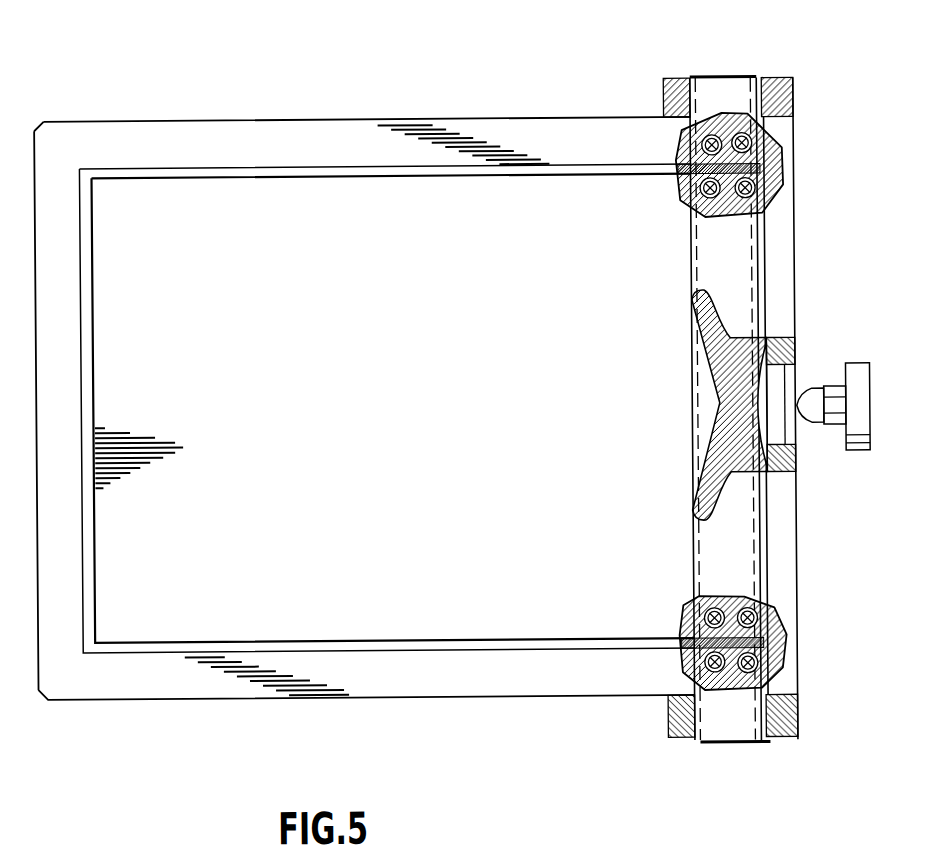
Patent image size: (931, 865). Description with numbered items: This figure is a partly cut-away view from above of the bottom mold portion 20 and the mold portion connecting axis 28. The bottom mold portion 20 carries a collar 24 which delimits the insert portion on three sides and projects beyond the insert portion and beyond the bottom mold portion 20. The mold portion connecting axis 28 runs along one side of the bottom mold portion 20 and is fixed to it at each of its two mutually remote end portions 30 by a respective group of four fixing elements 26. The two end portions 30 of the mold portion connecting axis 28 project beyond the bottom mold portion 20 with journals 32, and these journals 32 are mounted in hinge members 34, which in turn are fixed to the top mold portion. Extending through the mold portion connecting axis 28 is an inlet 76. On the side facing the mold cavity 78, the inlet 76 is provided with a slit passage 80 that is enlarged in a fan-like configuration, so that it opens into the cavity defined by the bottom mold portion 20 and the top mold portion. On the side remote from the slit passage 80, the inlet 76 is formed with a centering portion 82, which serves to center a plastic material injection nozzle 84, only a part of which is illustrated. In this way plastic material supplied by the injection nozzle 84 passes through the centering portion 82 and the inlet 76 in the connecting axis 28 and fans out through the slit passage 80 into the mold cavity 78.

The bottom mold portion 20 is at (294, 138).
The collar 24 is at (94, 322).
The fixing elements 26 is at (755, 150).
The mold portion connecting axis 28 is at (760, 283).
The end portions 30 is at (760, 172).
The journals 32 is at (738, 104).
The hinge member 34 is at (796, 95).
The inlet 76 is at (704, 420).
The mold cavity 78 is at (479, 574).
The slit passage 80 is at (703, 374).
The centering portion 82 is at (750, 404).
The plastic material injection nozzle 84 is at (850, 453).